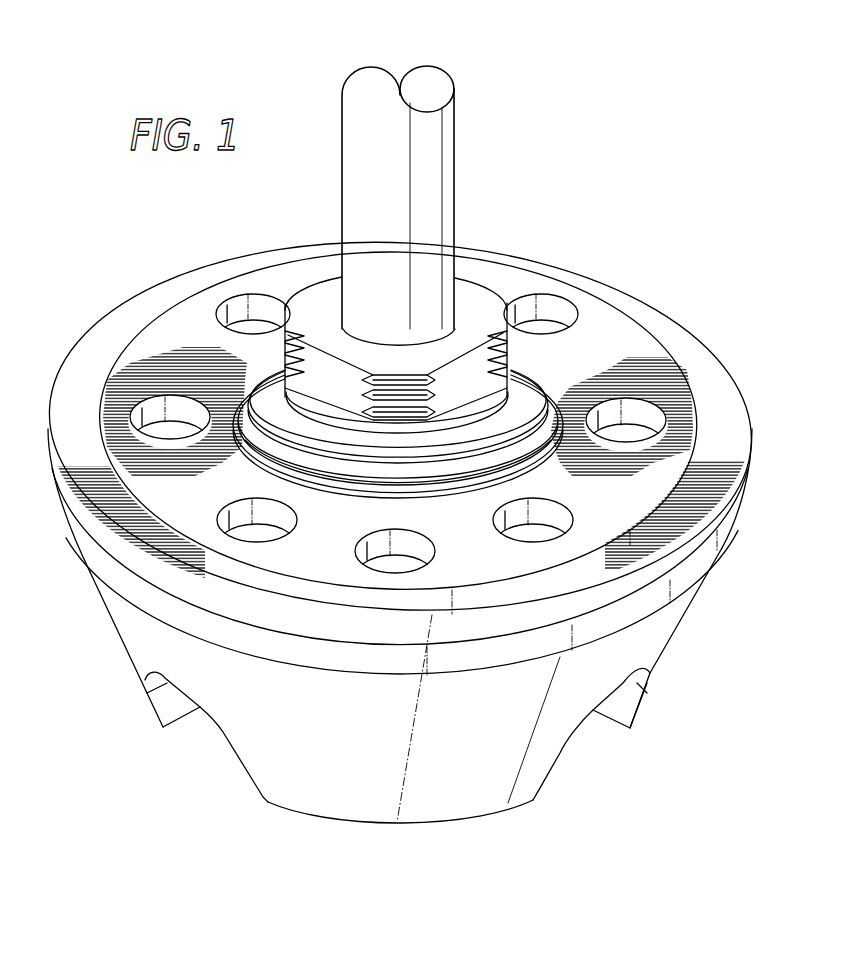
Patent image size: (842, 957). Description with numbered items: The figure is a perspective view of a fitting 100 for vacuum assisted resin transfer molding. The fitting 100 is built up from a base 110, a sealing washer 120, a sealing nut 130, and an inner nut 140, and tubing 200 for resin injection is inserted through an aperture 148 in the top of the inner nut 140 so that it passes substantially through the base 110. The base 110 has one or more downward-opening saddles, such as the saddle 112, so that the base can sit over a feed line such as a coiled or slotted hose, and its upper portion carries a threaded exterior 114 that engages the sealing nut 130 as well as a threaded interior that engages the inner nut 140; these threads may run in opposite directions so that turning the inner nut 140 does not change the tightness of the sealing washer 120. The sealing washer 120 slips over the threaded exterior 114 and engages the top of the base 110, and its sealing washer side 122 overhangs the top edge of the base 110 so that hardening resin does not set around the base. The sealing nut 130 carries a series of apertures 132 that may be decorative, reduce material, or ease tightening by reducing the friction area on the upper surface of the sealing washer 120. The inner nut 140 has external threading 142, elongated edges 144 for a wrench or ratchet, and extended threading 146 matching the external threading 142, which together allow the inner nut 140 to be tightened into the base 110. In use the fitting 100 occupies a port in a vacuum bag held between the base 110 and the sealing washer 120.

The fitting 100 is at (690, 112).
The base 110 is at (443, 798).
The saddle 112 is at (590, 733).
The threaded exterior 114 is at (557, 377).
The sealing washer 120 is at (717, 457).
The sealing washer side 122 is at (740, 513).
The sealing nut 130 is at (640, 343).
The apertures 132 is at (642, 415).
The inner nut 140 is at (461, 342).
The external threading 142 is at (508, 395).
The elongated edges 144 is at (330, 370).
The extended threading 146 is at (495, 345).
The aperture 148 is at (340, 318).
The tubing 200 is at (432, 173).